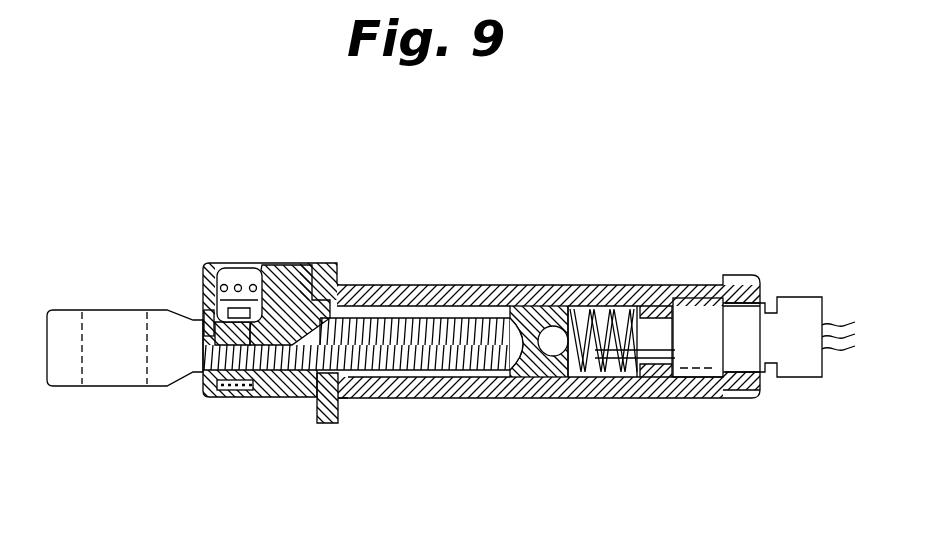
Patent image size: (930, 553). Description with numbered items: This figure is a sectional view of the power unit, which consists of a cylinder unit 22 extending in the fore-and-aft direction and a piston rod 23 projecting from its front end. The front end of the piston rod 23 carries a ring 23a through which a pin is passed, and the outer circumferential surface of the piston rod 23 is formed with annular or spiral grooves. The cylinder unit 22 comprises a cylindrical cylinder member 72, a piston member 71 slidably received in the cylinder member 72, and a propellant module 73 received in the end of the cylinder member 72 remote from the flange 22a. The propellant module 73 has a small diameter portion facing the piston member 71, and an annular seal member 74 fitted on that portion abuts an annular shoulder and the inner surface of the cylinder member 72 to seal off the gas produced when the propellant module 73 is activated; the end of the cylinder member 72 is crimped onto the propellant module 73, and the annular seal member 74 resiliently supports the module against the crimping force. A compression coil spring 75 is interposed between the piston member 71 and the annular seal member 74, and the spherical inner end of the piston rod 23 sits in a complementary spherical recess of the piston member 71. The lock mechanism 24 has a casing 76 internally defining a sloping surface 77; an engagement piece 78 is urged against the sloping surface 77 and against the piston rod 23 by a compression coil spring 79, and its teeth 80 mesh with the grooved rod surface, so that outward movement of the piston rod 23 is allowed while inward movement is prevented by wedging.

The cylinder unit 22 is at (484, 185).
The flange 22a is at (330, 423).
The piston rod 23 is at (408, 318).
The ring 23a is at (70, 375).
The lock mechanism 24 is at (232, 405).
The piston member 71 is at (518, 398).
The cylinder member 72 is at (528, 285).
The propellant module 73 is at (697, 310).
The annular seal member 74 is at (648, 378).
The compression coil spring 75 is at (603, 306).
The casing 76 is at (278, 398).
The sloping surface 77 is at (305, 263).
The engagement piece 78 is at (262, 263).
The compression coil spring 79 is at (240, 263).
The teeth 80 is at (205, 322).